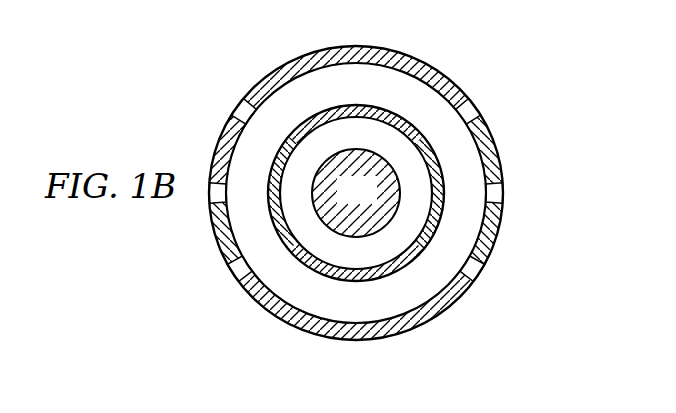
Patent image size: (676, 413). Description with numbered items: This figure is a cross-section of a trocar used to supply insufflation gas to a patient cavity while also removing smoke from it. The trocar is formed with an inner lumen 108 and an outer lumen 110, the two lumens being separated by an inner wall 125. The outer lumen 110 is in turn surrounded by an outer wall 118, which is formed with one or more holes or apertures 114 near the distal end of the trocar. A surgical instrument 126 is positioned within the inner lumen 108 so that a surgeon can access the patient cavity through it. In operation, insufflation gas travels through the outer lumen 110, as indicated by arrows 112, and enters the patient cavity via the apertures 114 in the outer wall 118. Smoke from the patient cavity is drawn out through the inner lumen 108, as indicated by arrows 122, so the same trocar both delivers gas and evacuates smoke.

The inner lumen 108 is at (370, 140).
The outer lumen 110 is at (382, 86).
The arrows 112 is at (457, 148).
The apertures 114 is at (244, 115).
The outer wall 118 is at (217, 243).
The arrows 122 is at (410, 215).
The inner wall 125 is at (336, 108).
The surgical instrument 126 is at (375, 202).